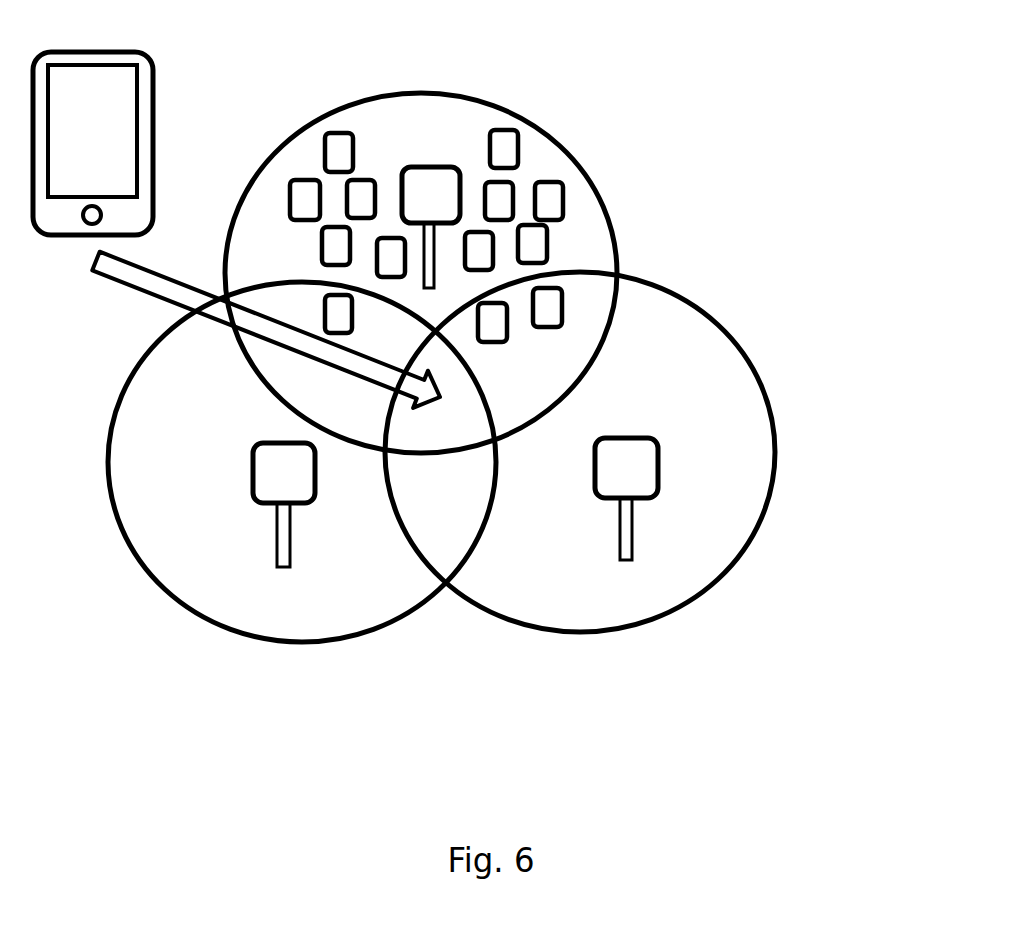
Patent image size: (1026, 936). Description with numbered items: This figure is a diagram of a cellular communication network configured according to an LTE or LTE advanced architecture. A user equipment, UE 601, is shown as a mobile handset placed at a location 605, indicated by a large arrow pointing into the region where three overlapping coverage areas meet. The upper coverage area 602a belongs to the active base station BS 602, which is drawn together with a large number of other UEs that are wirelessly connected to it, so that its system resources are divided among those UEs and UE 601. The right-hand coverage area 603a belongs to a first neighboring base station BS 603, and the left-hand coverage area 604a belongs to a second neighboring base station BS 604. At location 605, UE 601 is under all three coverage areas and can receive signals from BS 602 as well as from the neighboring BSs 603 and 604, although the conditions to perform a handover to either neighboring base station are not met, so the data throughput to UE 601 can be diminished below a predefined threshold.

The UE 601 is at (70, 243).
The BS 602 is at (428, 167).
The coverage area 602a is at (555, 138).
The BS 603 is at (400, 235).
The cover area 603a is at (793, 442).
The BS 604 is at (248, 453).
The coverage area 604a is at (127, 548).
The location 605 is at (178, 265).